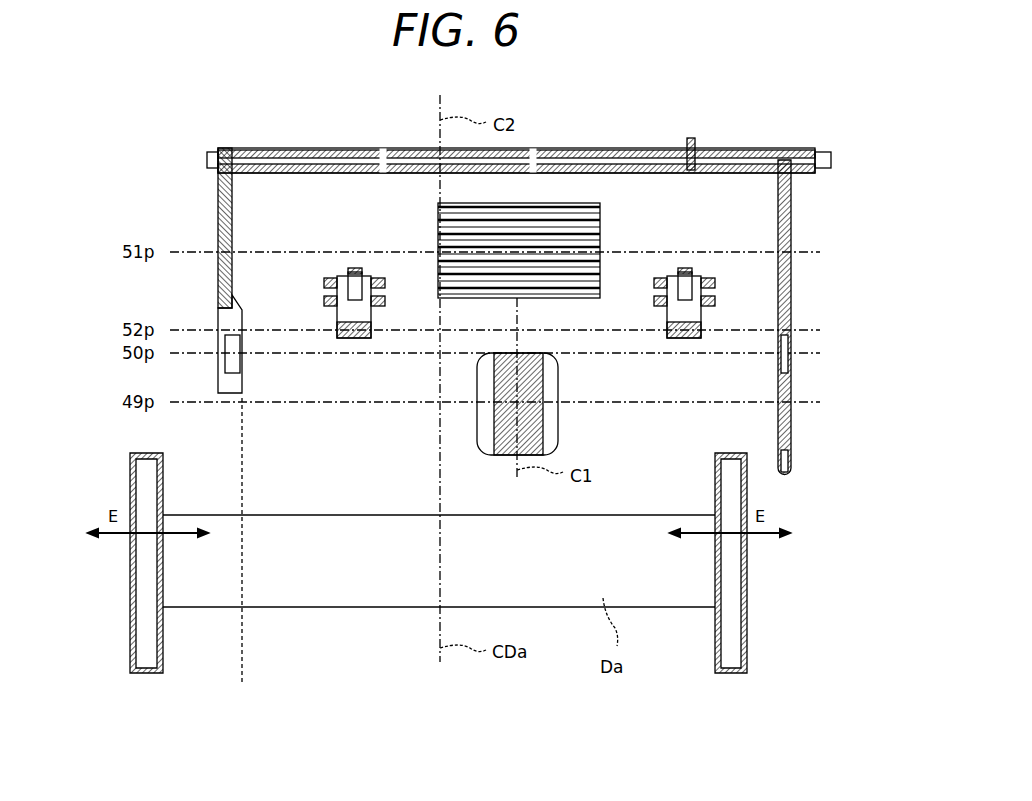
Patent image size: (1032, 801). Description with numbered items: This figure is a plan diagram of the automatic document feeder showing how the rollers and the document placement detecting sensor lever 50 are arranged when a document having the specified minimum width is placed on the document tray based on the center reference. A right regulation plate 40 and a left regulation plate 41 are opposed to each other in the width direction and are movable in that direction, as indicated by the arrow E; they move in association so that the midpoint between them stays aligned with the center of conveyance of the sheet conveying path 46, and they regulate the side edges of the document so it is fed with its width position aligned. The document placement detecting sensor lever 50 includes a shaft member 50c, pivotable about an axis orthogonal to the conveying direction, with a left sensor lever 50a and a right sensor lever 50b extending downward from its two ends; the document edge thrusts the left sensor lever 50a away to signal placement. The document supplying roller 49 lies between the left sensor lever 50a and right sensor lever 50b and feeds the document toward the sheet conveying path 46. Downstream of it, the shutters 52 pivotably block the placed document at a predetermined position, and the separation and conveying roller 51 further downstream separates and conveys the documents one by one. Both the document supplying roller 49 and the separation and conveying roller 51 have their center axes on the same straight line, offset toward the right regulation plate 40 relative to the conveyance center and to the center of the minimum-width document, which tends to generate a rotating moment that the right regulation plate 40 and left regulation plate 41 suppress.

The right regulation plate 40 is at (730, 674).
The left regulation plate 41 is at (143, 674).
The sheet conveying path 46 is at (325, 125).
The document supplying roller 49 is at (558, 415).
The document placement detecting sensor lever 50 is at (718, 130).
The left sensor lever 50a is at (217, 242).
The right sensor lever 50b is at (792, 245).
The shaft member 50c is at (689, 146).
The separation and conveying roller 51 is at (600, 212).
The shutters 52 is at (324, 293).